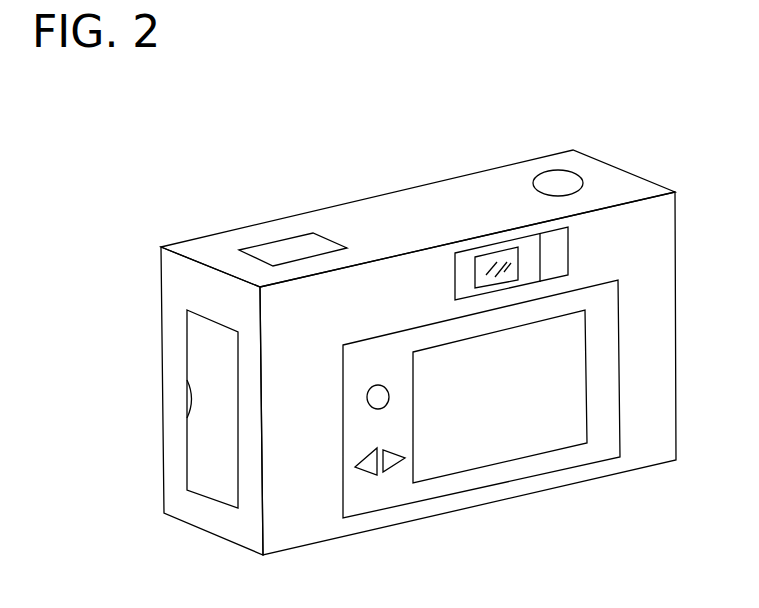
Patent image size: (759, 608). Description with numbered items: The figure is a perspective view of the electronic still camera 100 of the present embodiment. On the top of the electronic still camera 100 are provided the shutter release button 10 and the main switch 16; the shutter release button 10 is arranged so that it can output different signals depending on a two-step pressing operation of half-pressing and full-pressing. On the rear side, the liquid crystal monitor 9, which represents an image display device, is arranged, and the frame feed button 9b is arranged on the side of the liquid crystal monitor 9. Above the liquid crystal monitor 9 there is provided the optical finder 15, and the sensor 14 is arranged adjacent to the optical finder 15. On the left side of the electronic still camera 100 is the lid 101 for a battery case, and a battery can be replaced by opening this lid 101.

The electronic still camera 100 is at (410, 185).
The main switch 16 is at (287, 240).
The shutter release button 10 is at (560, 185).
The sensor 14 is at (568, 243).
The optical finder 15 is at (498, 250).
The liquid crystal monitor 9 is at (491, 455).
The frame feed button 9b is at (365, 473).
The lid for battery case 101 is at (213, 490).